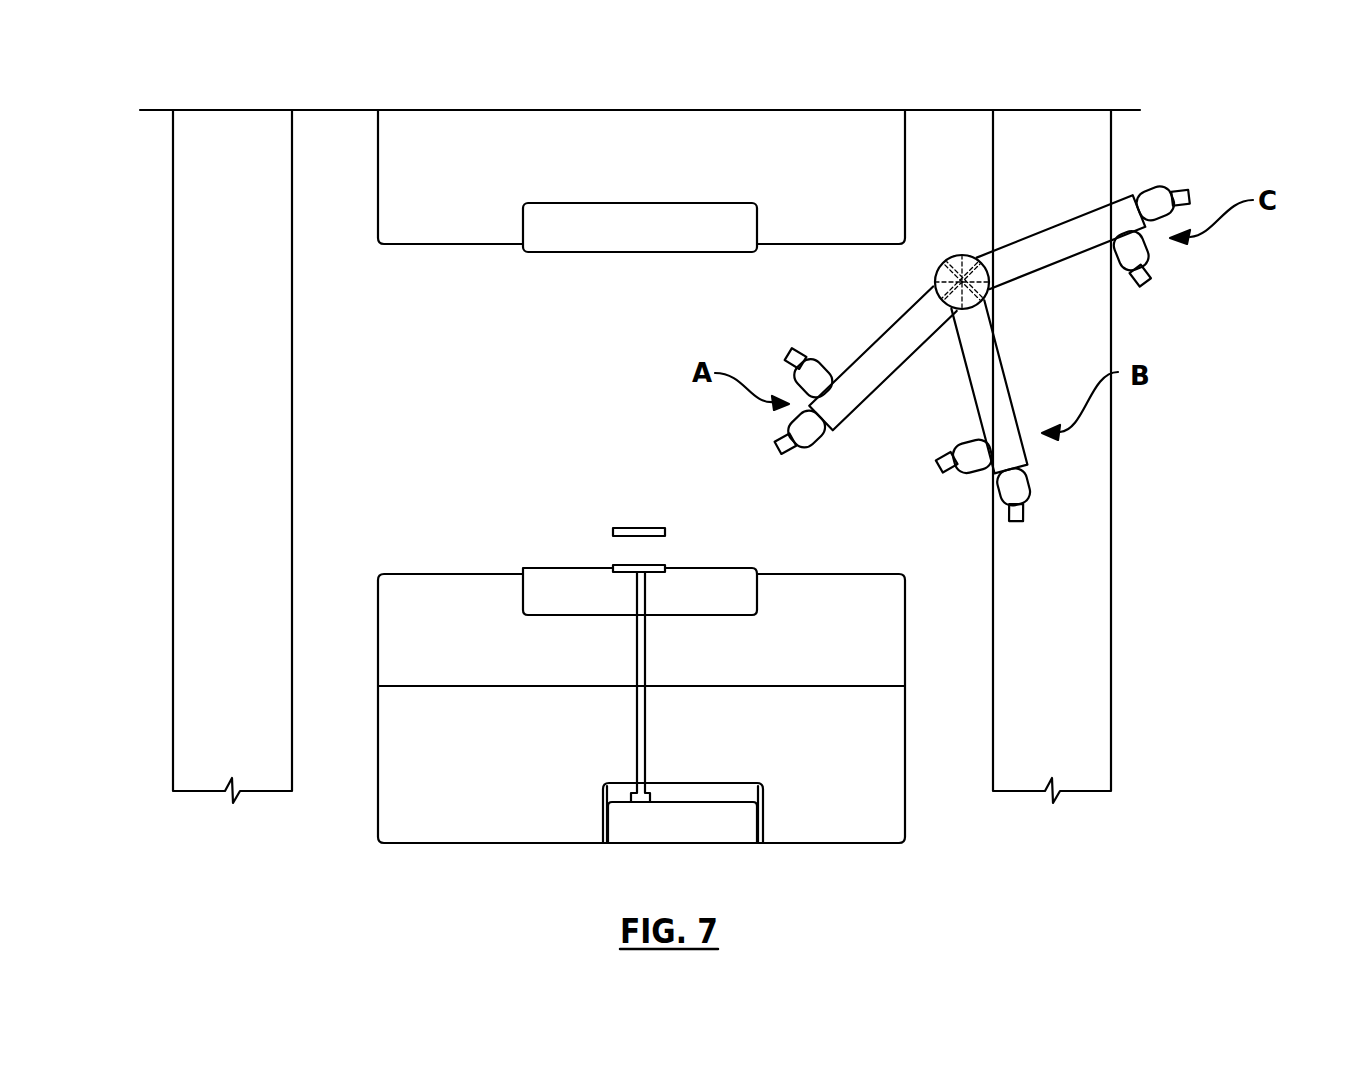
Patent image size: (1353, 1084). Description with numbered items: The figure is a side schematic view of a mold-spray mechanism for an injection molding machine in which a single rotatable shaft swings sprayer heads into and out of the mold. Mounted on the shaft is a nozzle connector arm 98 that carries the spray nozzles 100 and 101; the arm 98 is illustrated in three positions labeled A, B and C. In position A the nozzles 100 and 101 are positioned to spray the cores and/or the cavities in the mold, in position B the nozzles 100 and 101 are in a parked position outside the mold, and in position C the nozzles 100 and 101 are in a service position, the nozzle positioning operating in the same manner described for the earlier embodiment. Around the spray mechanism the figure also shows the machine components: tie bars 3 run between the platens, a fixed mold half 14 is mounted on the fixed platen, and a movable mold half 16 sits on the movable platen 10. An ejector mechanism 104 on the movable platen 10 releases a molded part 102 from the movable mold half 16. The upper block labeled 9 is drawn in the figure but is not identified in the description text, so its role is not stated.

The tie bars 3 is at (268, 412).
The upper block 9 is at (785, 132).
The platen 10 is at (885, 752).
The fixed mold half 14 is at (705, 238).
The movable mold half 16 is at (735, 577).
The nozzle connector arm 98 is at (1058, 258).
The spray nozzle 100 is at (1150, 252).
The spray nozzle 101 is at (1155, 200).
The part 102 is at (640, 527).
The ejector mechanism 104 is at (648, 656).